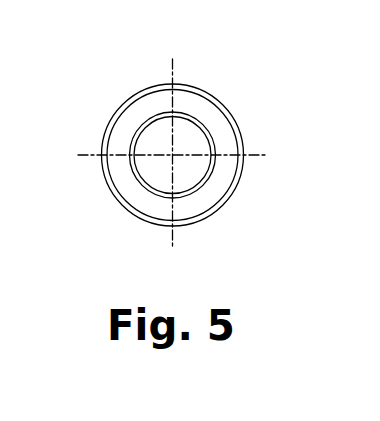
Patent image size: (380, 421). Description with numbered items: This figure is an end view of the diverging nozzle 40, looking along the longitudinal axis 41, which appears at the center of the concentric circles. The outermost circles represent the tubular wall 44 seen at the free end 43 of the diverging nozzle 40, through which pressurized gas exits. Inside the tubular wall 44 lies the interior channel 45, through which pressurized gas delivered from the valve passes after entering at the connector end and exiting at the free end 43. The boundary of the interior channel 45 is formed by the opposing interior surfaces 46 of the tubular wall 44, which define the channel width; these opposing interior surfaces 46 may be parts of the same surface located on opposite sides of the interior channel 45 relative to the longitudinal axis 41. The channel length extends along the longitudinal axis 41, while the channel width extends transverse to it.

The diverging nozzle 40 is at (240, 79).
The longitudinal axis 41 is at (172, 156).
The free end 43 is at (198, 217).
The tubular wall 44 is at (230, 197).
The interior channel 45 is at (150, 133).
The opposing interior surfaces 46 is at (222, 176).